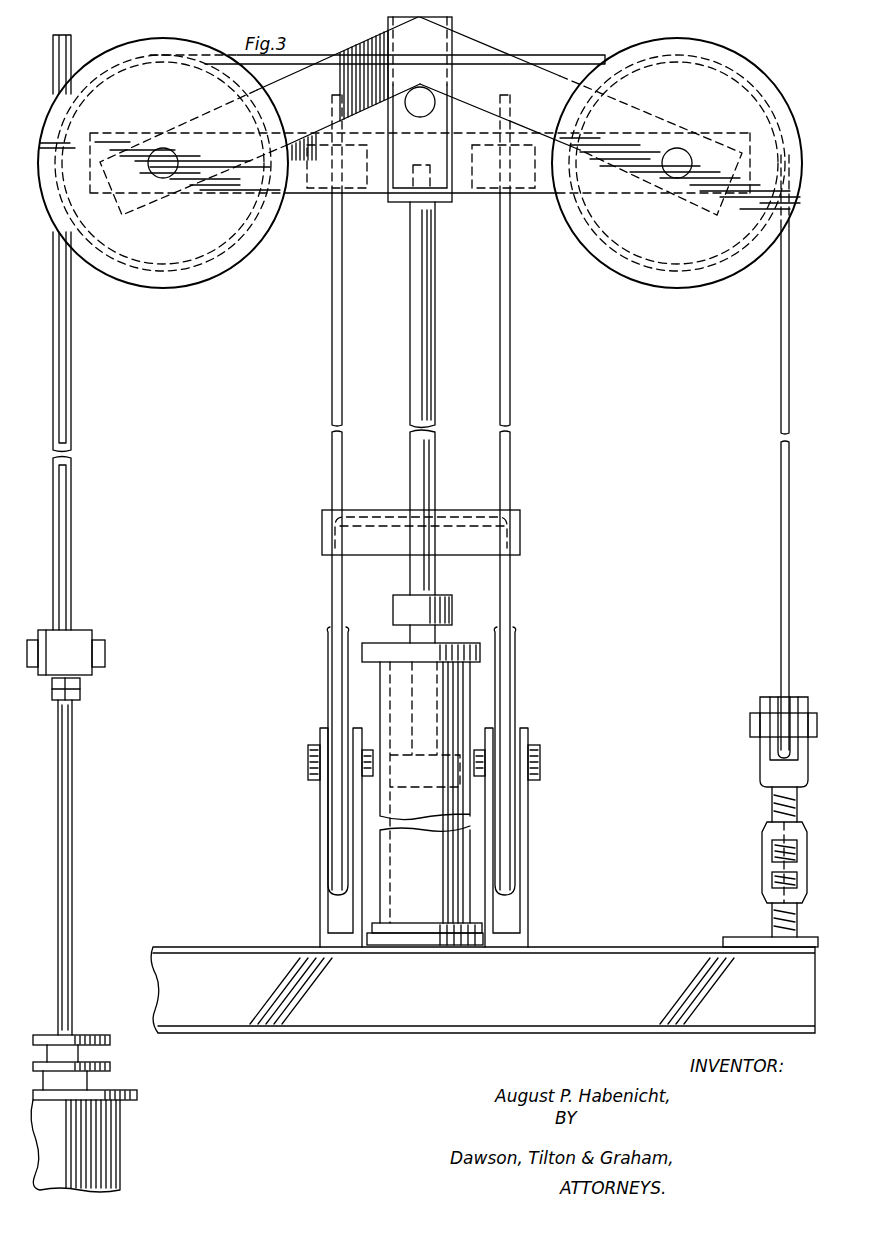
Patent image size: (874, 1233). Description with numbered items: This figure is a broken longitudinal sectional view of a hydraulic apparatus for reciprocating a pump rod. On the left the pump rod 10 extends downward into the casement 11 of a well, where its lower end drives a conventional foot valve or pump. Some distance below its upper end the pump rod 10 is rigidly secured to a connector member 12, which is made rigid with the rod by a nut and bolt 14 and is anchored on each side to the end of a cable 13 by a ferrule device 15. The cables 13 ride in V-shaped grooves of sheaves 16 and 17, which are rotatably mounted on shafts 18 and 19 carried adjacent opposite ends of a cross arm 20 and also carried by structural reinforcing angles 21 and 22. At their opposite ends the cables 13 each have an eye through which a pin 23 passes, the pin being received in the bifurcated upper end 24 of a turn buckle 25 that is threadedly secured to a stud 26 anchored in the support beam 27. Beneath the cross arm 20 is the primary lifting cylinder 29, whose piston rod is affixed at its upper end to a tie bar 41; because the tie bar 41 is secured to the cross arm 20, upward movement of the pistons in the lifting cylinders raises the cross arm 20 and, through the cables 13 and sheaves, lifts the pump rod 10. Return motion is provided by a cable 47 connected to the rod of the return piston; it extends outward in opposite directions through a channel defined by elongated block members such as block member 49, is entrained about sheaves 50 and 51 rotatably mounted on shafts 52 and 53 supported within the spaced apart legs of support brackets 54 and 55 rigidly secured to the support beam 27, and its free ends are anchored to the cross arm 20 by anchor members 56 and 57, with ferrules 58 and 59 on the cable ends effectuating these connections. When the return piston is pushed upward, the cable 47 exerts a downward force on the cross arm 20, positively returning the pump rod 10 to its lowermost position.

The pump rod 10 is at (72, 337).
The casement 11 is at (112, 1130).
The connector member 12 is at (80, 638).
The cable 13 is at (779, 636).
The nut and bolt 14 is at (98, 668).
The ferrule device 15 is at (80, 690).
The sheave 16 is at (181, 278).
The sheave 17 is at (652, 278).
The shaft 18 is at (165, 178).
The shaft 19 is at (678, 178).
The cross arm 20 is at (287, 198).
The structural reinforcing angle 21 is at (283, 84).
The structural reinforcing angle 22 is at (500, 62).
The pin 23 is at (748, 728).
The bifurcated upper end 24 is at (758, 772).
The turn buckle 25 is at (760, 858).
The stud 26 is at (770, 918).
The support beam 27 is at (598, 948).
The primary lifting cylinder 29 is at (380, 677).
The tie bar 41 is at (420, 118).
The cable 47 is at (331, 376).
The elongated block member 49 is at (522, 532).
The sheave 50 is at (326, 672).
The sheave 51 is at (517, 672).
The shaft 52 is at (366, 748).
The shaft 53 is at (480, 750).
The support bracket 54 is at (318, 827).
The support bracket 55 is at (530, 866).
The anchor member 56 is at (350, 193).
The anchor member 57 is at (492, 193).
The ferrule 58 is at (344, 128).
The ferrule 59 is at (512, 128).